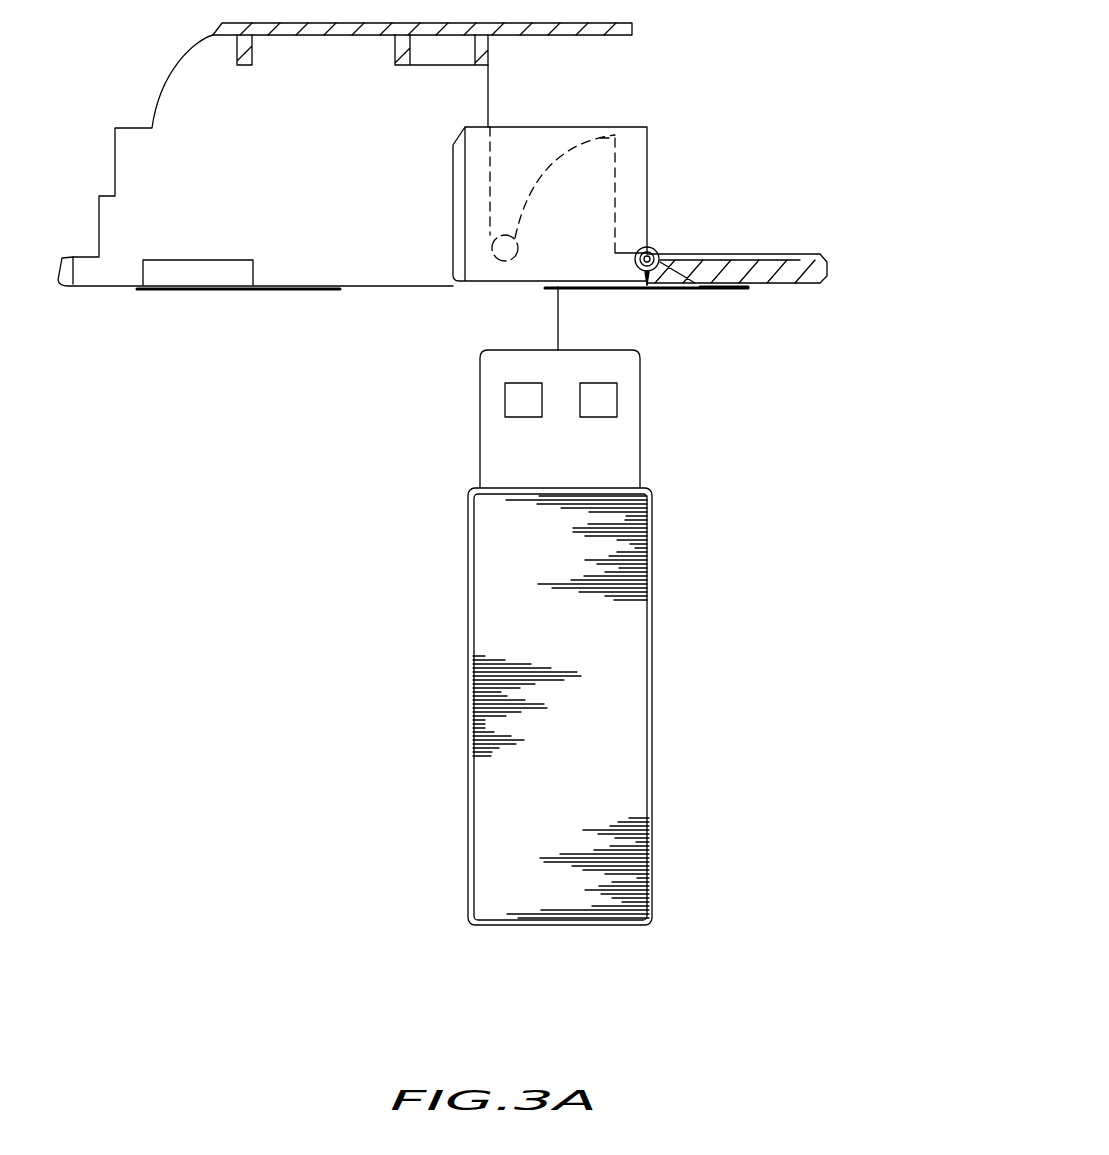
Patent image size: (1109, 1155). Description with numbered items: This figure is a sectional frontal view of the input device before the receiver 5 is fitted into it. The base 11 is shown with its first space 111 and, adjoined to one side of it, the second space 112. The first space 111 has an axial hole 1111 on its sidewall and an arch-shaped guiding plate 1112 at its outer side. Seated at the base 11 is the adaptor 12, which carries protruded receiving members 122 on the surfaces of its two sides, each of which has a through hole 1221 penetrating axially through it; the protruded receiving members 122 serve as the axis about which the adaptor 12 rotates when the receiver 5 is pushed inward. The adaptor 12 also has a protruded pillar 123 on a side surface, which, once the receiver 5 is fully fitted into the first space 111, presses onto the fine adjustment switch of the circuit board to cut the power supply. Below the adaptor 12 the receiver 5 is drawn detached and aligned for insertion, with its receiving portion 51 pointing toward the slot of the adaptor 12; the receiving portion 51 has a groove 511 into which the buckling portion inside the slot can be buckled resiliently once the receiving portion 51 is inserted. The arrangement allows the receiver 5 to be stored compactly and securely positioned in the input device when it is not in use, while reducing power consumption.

The base 11 is at (810, 268).
The first space 111 is at (618, 78).
The second space 112 is at (188, 287).
The axial hole 1111 is at (662, 258).
The arch-shaped guiding plate 1112 is at (597, 173).
The adaptor 12 is at (455, 260).
The protruded receiving member 122 is at (657, 267).
The through hole 1221 is at (722, 288).
The protruded pillar 123 is at (495, 258).
The receiver 5 is at (688, 613).
The receiving portion 51 is at (508, 458).
The groove 511 is at (607, 402).